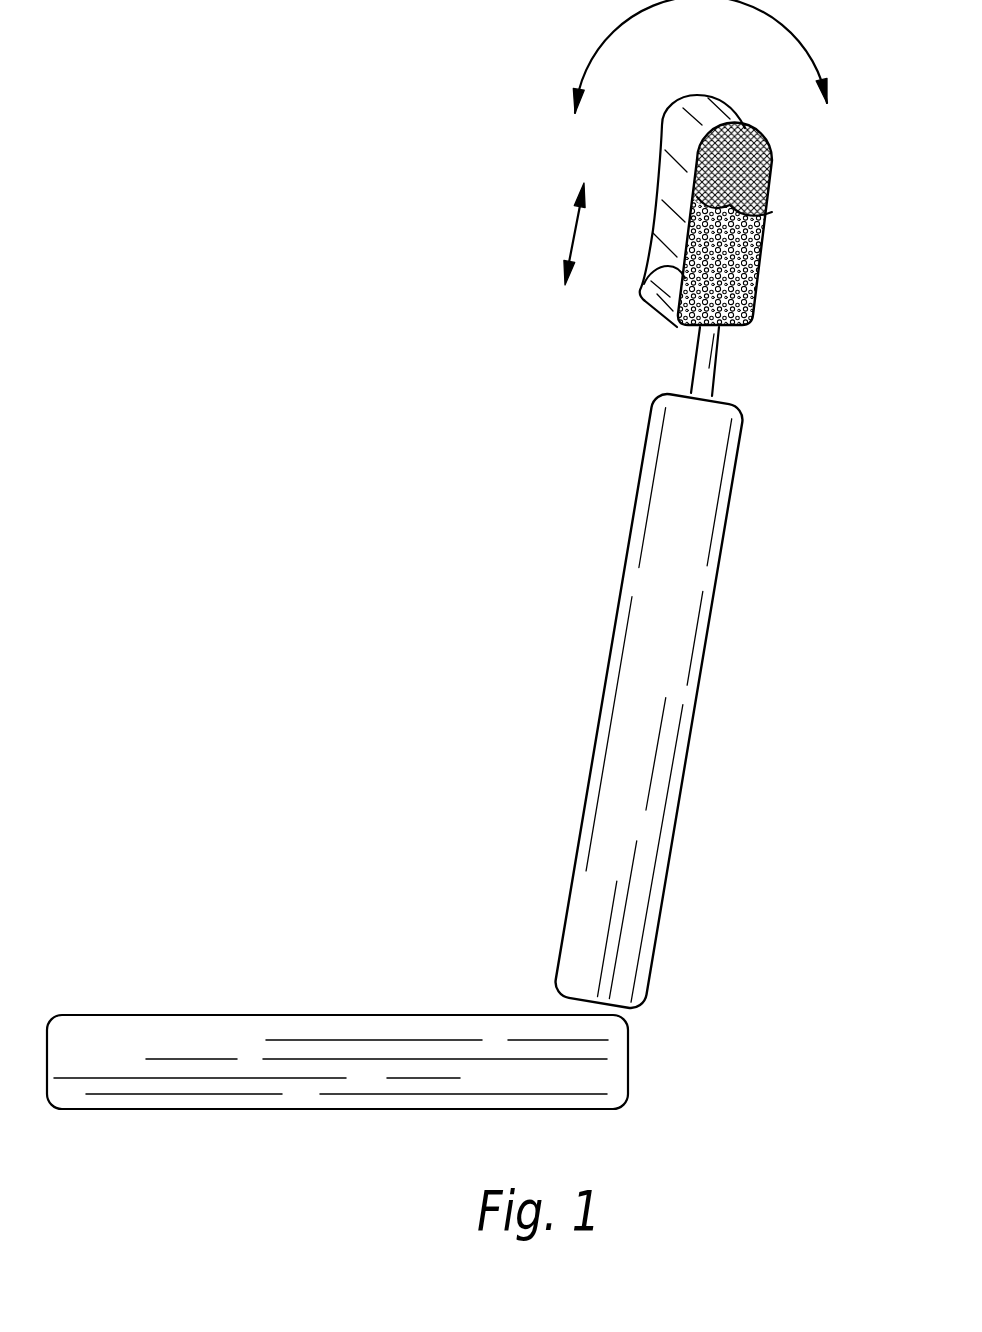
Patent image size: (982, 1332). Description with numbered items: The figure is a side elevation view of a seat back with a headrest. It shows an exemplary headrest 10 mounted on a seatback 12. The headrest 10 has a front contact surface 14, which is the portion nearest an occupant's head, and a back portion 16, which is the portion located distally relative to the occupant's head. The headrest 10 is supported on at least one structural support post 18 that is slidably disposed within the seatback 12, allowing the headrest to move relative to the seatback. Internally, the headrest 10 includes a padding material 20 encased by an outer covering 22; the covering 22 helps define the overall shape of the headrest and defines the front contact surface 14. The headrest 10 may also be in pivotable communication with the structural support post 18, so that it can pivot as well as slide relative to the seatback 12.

The headrest 10 is at (673, 224).
The seatback 12 is at (620, 582).
The front contact surface 14 is at (646, 296).
The back portion 16 is at (771, 220).
The structural support post 18 is at (713, 360).
The padding material 20 is at (742, 251).
The outer covering 22 is at (742, 171).